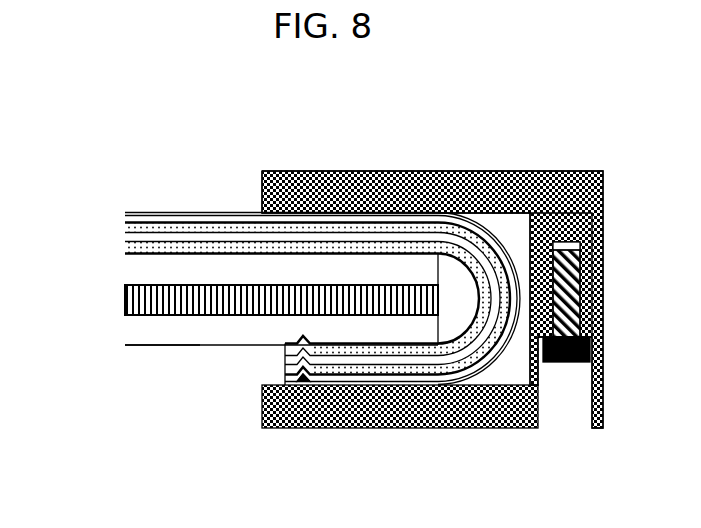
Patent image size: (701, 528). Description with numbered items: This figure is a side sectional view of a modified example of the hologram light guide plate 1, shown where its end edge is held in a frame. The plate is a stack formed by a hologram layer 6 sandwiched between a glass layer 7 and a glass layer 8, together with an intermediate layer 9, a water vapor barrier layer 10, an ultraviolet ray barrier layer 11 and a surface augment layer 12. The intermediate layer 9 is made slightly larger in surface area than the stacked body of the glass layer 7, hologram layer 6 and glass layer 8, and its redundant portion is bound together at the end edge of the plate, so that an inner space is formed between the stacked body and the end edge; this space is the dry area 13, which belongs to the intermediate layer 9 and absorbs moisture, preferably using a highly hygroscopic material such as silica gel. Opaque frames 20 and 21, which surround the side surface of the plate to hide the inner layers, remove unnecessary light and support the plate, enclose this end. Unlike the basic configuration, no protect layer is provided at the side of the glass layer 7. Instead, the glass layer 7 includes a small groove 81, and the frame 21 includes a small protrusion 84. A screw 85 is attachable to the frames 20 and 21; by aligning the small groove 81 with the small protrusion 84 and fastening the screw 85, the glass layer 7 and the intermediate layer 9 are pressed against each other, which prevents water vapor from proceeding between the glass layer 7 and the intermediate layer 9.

The hologram light guide plate 1 is at (145, 347).
The hologram layer 6 is at (130, 300).
The glass layer 7 is at (135, 333).
The glass layer 8 is at (130, 267).
The intermediate layer 9 is at (125, 250).
The water vapor barrier layer 10 is at (125, 238).
The ultraviolet ray barrier layer 11 is at (125, 228).
The surface augment layer 12 is at (176, 220).
The dry area 13 is at (449, 298).
The frame 20 is at (490, 171).
The frame 21 is at (400, 417).
The small groove 81 is at (290, 340).
The small protrusion 84 is at (305, 388).
The screw 85 is at (580, 264).